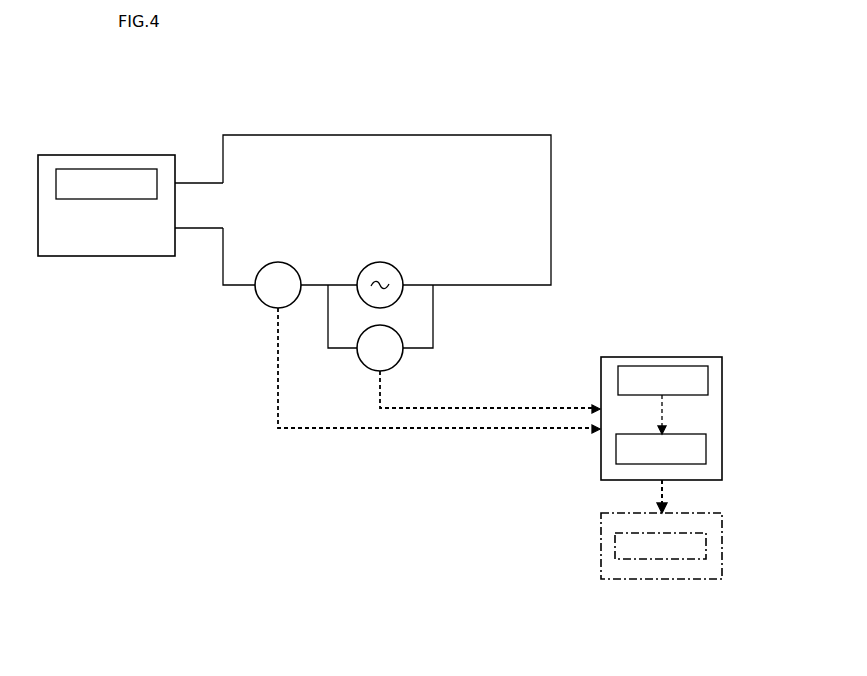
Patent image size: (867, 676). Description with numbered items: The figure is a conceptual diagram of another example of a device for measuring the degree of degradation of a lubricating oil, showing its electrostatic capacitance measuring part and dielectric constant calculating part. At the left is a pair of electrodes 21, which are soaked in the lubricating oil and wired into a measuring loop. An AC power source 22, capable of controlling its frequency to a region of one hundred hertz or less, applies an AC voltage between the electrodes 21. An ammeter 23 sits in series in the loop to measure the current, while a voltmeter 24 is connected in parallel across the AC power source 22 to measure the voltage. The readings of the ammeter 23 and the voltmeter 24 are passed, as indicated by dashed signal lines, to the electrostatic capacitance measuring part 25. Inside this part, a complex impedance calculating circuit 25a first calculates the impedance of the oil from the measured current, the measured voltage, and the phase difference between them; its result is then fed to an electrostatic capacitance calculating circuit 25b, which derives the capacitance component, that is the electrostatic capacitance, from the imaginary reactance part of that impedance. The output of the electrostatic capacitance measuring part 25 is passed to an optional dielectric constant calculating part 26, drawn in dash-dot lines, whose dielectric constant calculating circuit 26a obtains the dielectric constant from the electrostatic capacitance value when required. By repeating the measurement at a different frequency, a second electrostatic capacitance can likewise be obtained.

The pair of electrodes 21 is at (113, 155).
The AC power source 22 is at (388, 265).
The ammeter 23 is at (262, 302).
The voltmeter 24 is at (375, 372).
The electrostatic capacitance measuring part 25 is at (665, 357).
The complex impedance calculating circuit 25a is at (722, 375).
The electrostatic capacitance calculating circuit 25b is at (722, 434).
The dielectric constant calculating part 26 is at (722, 542).
The dielectric constant calculating circuit 26a is at (683, 559).